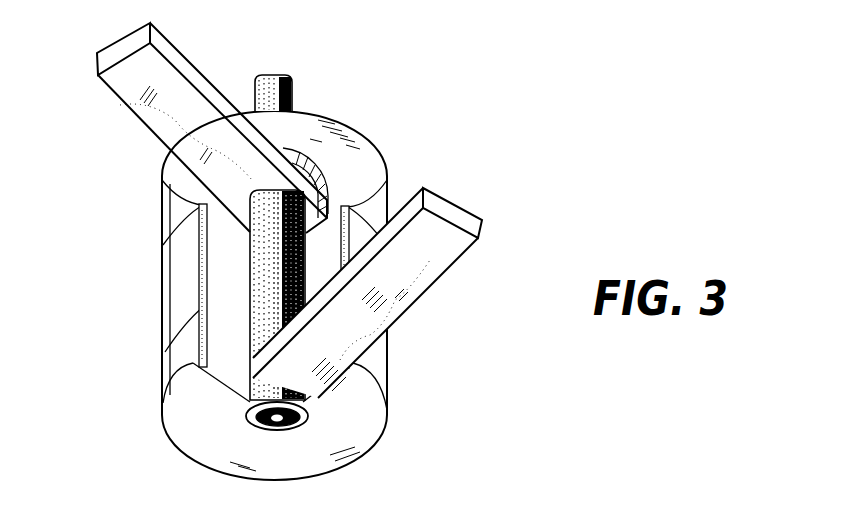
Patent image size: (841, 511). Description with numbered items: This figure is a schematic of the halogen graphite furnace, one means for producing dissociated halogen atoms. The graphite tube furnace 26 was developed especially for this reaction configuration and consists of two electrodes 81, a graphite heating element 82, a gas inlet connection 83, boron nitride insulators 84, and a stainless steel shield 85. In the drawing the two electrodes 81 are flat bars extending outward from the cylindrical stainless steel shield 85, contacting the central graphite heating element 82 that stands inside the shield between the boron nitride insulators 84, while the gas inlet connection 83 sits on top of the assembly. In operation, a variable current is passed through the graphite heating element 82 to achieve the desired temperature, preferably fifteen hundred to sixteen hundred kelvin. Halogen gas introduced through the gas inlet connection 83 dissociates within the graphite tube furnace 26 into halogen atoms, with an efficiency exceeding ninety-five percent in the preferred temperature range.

The graphite tube furnace 26 is at (230, 62).
The electrodes 81 is at (97, 65).
The graphite heating element 82 is at (252, 329).
The gas inlet connection 83 is at (289, 82).
The boron nitride insulators 84 is at (212, 283).
The stainless steel shield 85 is at (372, 425).